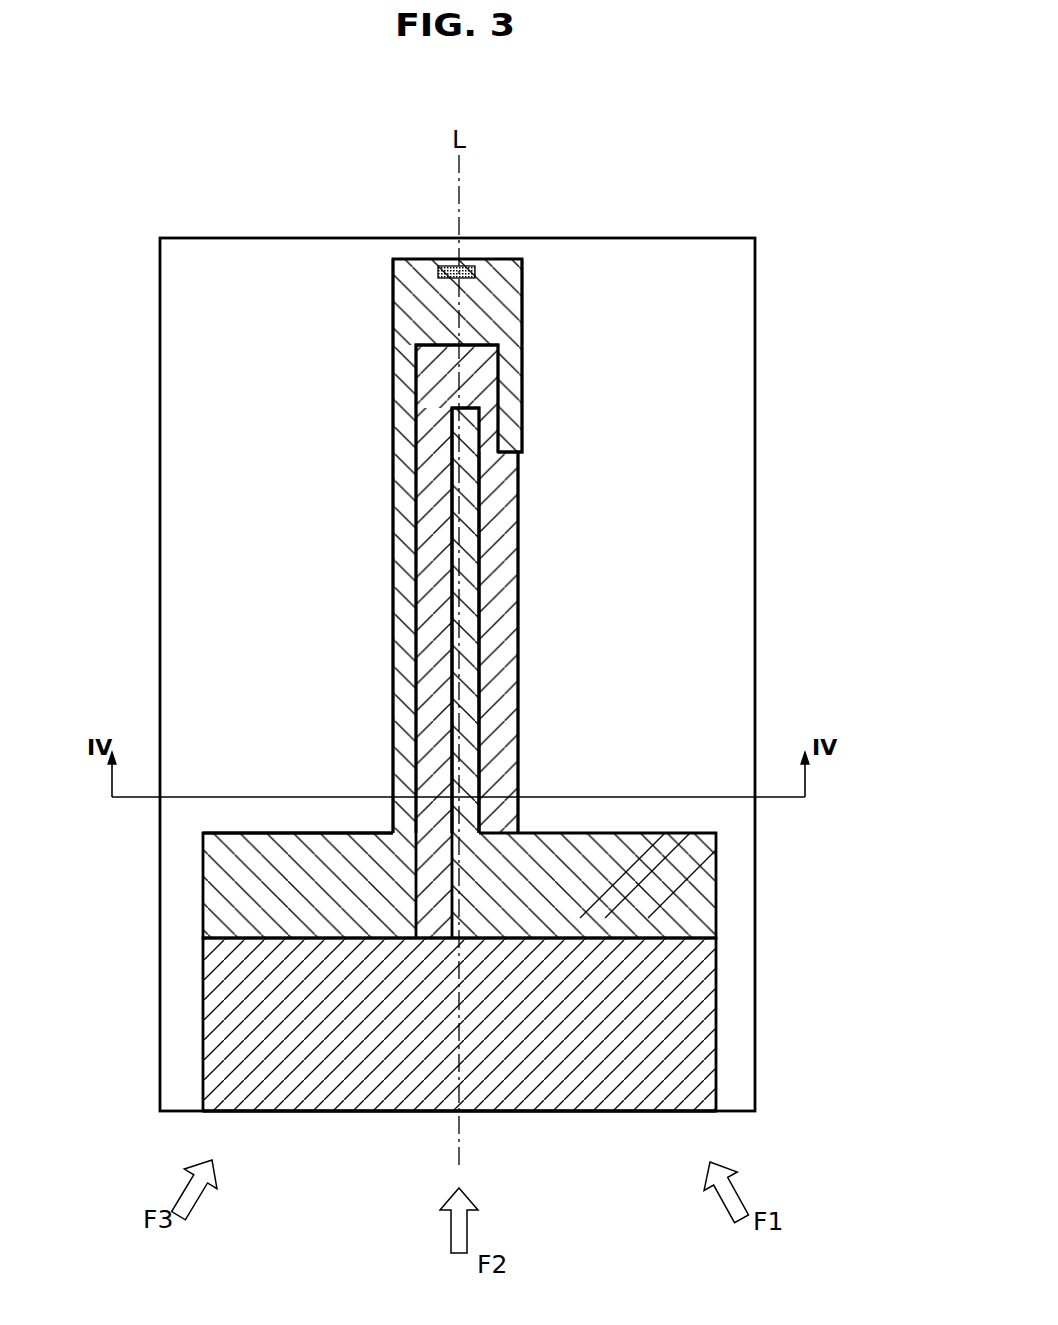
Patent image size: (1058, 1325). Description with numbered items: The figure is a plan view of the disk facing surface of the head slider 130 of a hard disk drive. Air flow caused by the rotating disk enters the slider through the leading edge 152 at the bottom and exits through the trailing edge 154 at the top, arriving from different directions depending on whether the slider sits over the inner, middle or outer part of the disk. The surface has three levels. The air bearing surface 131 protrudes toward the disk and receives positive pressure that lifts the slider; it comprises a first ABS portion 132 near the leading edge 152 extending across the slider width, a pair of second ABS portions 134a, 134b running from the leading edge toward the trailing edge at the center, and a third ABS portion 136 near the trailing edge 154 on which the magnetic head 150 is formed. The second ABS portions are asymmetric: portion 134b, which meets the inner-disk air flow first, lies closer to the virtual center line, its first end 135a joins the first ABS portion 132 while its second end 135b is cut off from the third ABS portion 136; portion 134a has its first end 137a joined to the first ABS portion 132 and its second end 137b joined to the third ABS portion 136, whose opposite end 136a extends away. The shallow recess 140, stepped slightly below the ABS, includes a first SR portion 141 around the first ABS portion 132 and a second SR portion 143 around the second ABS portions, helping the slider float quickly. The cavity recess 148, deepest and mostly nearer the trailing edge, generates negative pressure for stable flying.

The head slider 130 is at (216, 190).
The air bearing surface (ABS) 131 is at (90, 453).
The first ABS portion 132 is at (290, 852).
The second ABS portion 134a is at (405, 539).
The second ABS portion 134b is at (463, 580).
The first end 135a is at (465, 805).
The second end 135b is at (517, 467).
The third ABS portion 136 is at (417, 317).
The end 136a is at (513, 400).
The first end 137a is at (407, 835).
The second end 137b is at (403, 372).
The shallow recess (SR) 140 is at (832, 563).
The first SR portion 141 is at (565, 1017).
The second SR portion 143 is at (433, 510).
The cavity recess (CR) 148 is at (190, 348).
The magnetic head 150 is at (470, 265).
The leading edge 152 is at (558, 1112).
The trailing edge 154 is at (640, 238).